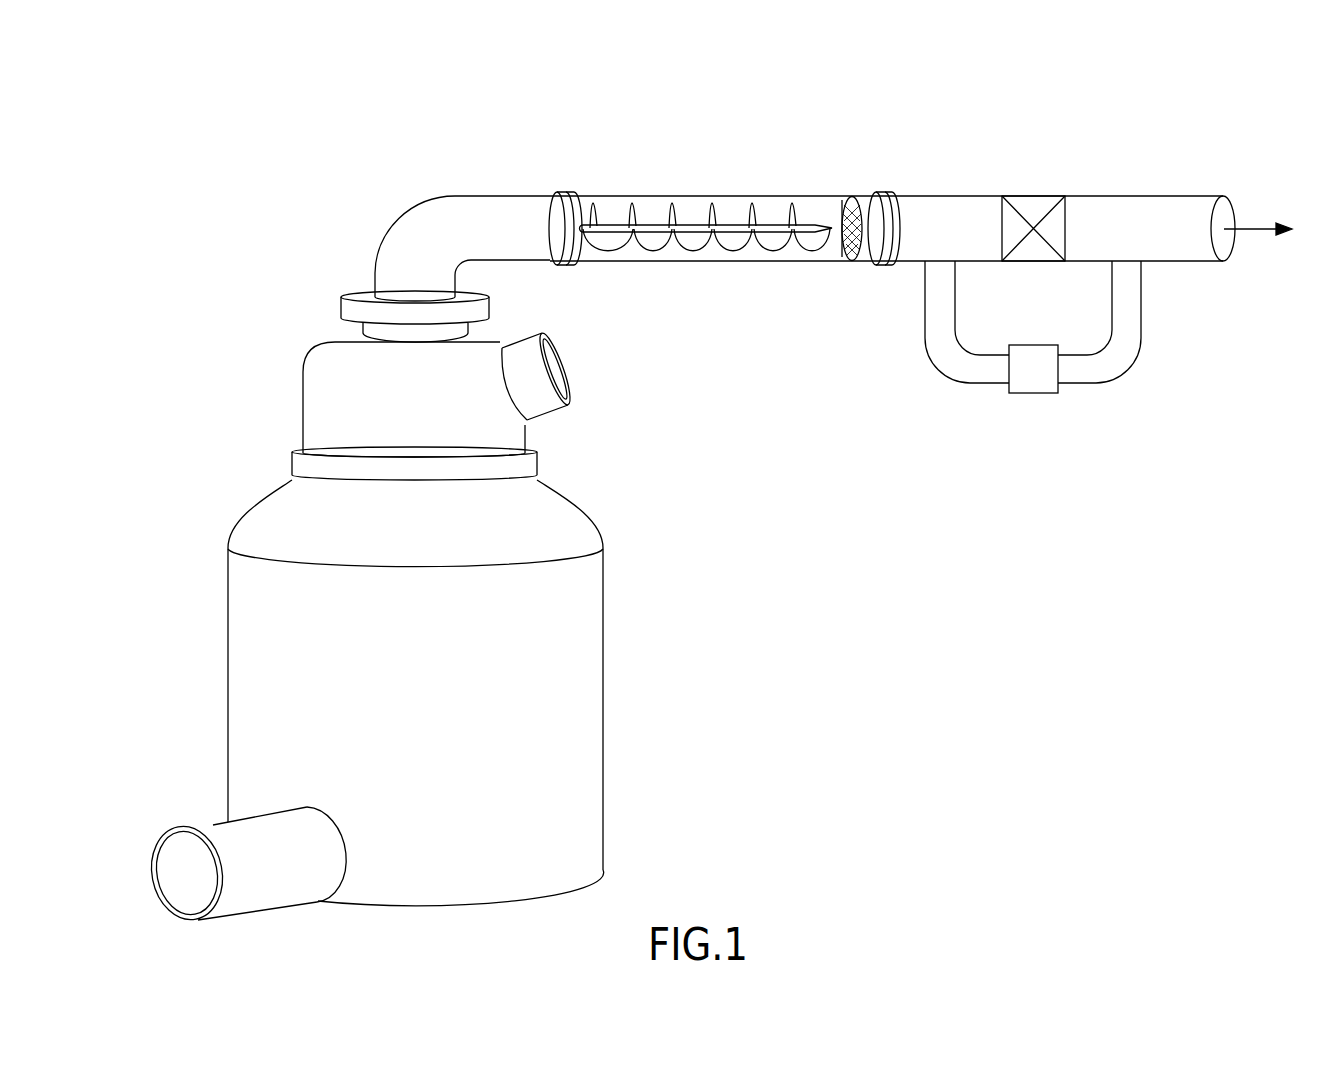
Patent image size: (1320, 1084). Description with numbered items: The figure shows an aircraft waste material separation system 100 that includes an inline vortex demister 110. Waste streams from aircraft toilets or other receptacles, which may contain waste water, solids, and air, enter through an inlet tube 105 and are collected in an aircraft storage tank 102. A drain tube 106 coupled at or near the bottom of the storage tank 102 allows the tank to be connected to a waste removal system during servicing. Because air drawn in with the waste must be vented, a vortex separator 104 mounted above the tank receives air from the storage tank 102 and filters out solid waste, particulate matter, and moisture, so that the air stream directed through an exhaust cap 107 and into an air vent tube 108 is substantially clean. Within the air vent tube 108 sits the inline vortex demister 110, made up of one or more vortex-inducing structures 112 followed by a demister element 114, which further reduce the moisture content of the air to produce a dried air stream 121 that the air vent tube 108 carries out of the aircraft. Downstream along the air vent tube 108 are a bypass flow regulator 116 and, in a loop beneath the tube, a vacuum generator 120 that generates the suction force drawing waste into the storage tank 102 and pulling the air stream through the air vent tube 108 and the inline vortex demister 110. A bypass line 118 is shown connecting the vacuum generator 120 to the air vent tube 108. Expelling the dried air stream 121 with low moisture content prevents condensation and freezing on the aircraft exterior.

The aircraft waste material separation system 100 is at (192, 84).
The aircraft storage tank 102 is at (238, 612).
The vortex separator 104 is at (318, 250).
The inlet tube 105 is at (541, 412).
The drain tube 106 is at (213, 822).
The exhaust cap 107 is at (405, 217).
The air vent tube 108 is at (502, 195).
The inline vortex demister 110 is at (850, 128).
The vortex-inducing structures 112 is at (693, 244).
The demister element 114 is at (850, 262).
The bypass flow regulator 116 is at (1033, 196).
The bypass loop 118 is at (988, 385).
The vacuum generator 120 is at (1035, 395).
The dried air stream 121 is at (1247, 233).